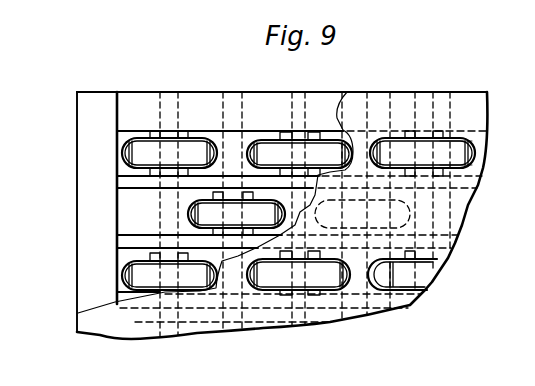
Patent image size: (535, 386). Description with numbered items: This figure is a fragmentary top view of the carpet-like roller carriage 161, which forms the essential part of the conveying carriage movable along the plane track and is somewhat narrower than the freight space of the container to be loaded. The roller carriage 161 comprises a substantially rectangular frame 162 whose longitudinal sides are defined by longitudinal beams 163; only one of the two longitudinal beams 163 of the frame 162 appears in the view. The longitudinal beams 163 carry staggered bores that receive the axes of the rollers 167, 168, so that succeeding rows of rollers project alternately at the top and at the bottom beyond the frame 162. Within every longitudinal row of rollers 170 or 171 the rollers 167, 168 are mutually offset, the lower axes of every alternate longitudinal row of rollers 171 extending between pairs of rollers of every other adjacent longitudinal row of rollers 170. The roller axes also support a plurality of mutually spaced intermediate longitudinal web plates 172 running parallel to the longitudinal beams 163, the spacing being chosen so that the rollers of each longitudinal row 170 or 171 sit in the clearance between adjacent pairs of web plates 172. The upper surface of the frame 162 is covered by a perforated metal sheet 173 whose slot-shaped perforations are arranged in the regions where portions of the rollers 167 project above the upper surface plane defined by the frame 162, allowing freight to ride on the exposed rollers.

The roller carriage 161 is at (80, 83).
The frame 162 is at (84, 137).
The longitudinal beam 163 is at (131, 103).
The roller 167 is at (253, 147).
The roller 168 is at (197, 215).
The longitudinal row of rollers 170 is at (455, 155).
The longitudinal row of rollers 171 is at (392, 218).
The intermediate longitudinal web plate 172 is at (122, 239).
The perforated metal sheet 173 is at (457, 102).